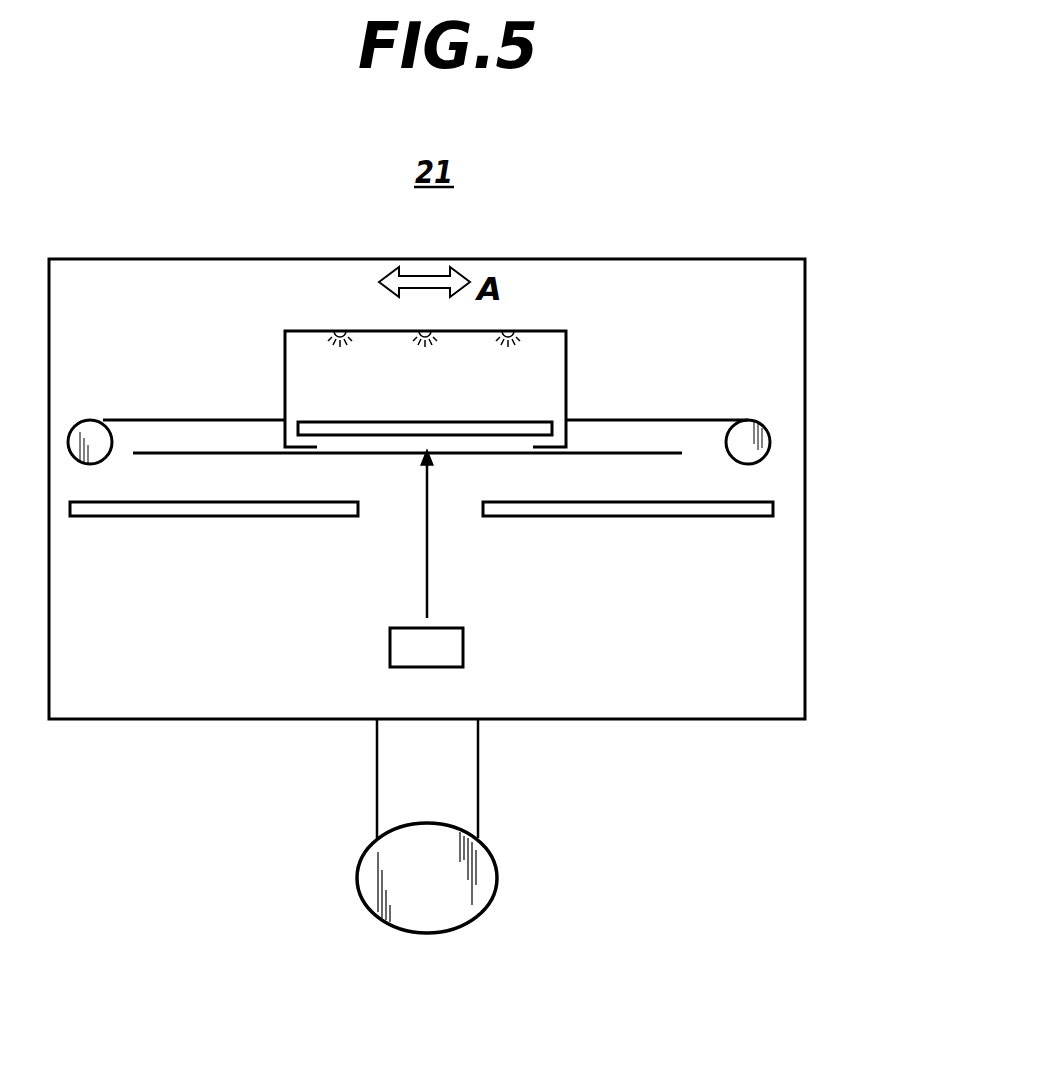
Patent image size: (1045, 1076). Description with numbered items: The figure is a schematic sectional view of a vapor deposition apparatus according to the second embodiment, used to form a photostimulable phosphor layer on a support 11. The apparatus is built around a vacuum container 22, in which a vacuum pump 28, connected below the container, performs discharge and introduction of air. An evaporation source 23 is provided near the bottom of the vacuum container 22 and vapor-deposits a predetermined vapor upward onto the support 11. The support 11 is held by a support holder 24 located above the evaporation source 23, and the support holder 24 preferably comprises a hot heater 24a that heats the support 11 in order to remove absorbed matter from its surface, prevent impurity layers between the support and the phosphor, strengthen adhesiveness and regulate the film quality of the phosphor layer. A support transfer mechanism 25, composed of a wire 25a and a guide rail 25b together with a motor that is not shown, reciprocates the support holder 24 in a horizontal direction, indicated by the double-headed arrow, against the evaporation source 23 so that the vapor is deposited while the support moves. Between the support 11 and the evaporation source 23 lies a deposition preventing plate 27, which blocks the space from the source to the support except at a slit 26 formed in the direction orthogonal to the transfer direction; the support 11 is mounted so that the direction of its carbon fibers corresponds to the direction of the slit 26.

The vacuum container 22 is at (805, 375).
The evaporation source 23 is at (463, 645).
The support holder 24 is at (537, 330).
The hot heater 24a is at (423, 330).
The support transfer mechanism 25 is at (429, 391).
The wire 25a is at (627, 417).
The guide rail 25b is at (597, 455).
The slit 26 is at (427, 555).
The deposition preventing plate 27 is at (583, 508).
The vacuum pump 28 is at (495, 872).
The support 11 is at (518, 423).